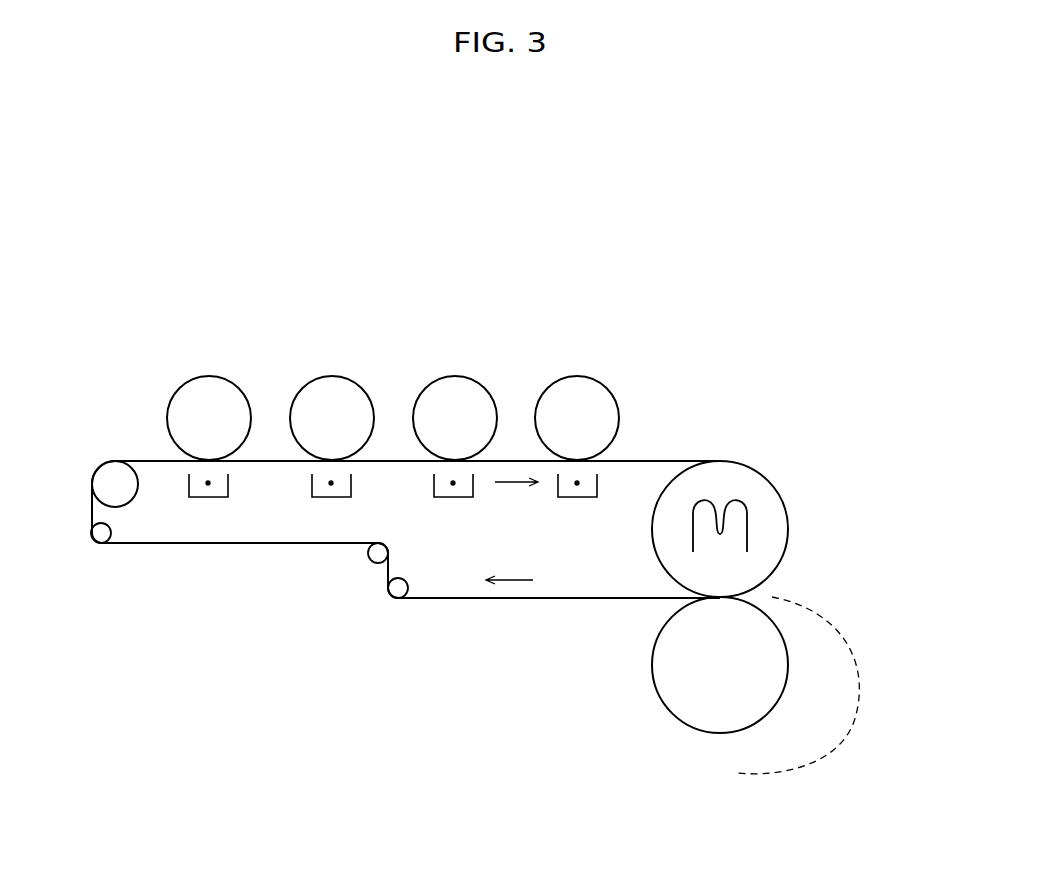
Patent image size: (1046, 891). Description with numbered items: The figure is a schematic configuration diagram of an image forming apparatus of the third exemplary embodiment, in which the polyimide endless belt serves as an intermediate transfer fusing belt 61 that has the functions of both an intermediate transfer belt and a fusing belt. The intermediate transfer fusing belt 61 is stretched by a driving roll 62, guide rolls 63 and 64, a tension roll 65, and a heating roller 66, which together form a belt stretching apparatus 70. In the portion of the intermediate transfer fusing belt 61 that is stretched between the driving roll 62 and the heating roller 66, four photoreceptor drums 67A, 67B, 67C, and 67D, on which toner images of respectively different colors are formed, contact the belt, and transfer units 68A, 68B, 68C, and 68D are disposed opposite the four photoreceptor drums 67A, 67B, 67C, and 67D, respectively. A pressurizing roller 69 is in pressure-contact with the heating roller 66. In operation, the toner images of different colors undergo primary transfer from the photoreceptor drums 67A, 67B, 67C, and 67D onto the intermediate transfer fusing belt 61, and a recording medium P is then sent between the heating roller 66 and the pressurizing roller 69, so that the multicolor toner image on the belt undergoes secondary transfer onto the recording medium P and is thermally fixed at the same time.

The intermediate transfer fusing belt 61 is at (663, 460).
The driving roll 62 is at (113, 470).
The guide roll 63 is at (96, 543).
The guide roll 64 is at (403, 588).
The tension roll 65 is at (378, 553).
The heating roller 66 is at (778, 515).
The photoreceptor drum 67A is at (210, 380).
The photoreceptor drum 67B is at (333, 380).
The photoreceptor drum 67C is at (455, 380).
The photoreceptor drum 67D is at (578, 380).
The transfer unit 68A is at (213, 497).
The transfer unit 68B is at (340, 497).
The transfer unit 68C is at (463, 497).
The transfer unit 68D is at (580, 497).
The pressurizing roller 69 is at (658, 667).
The belt stretching apparatus 70 is at (375, 629).
The recording medium P is at (858, 707).